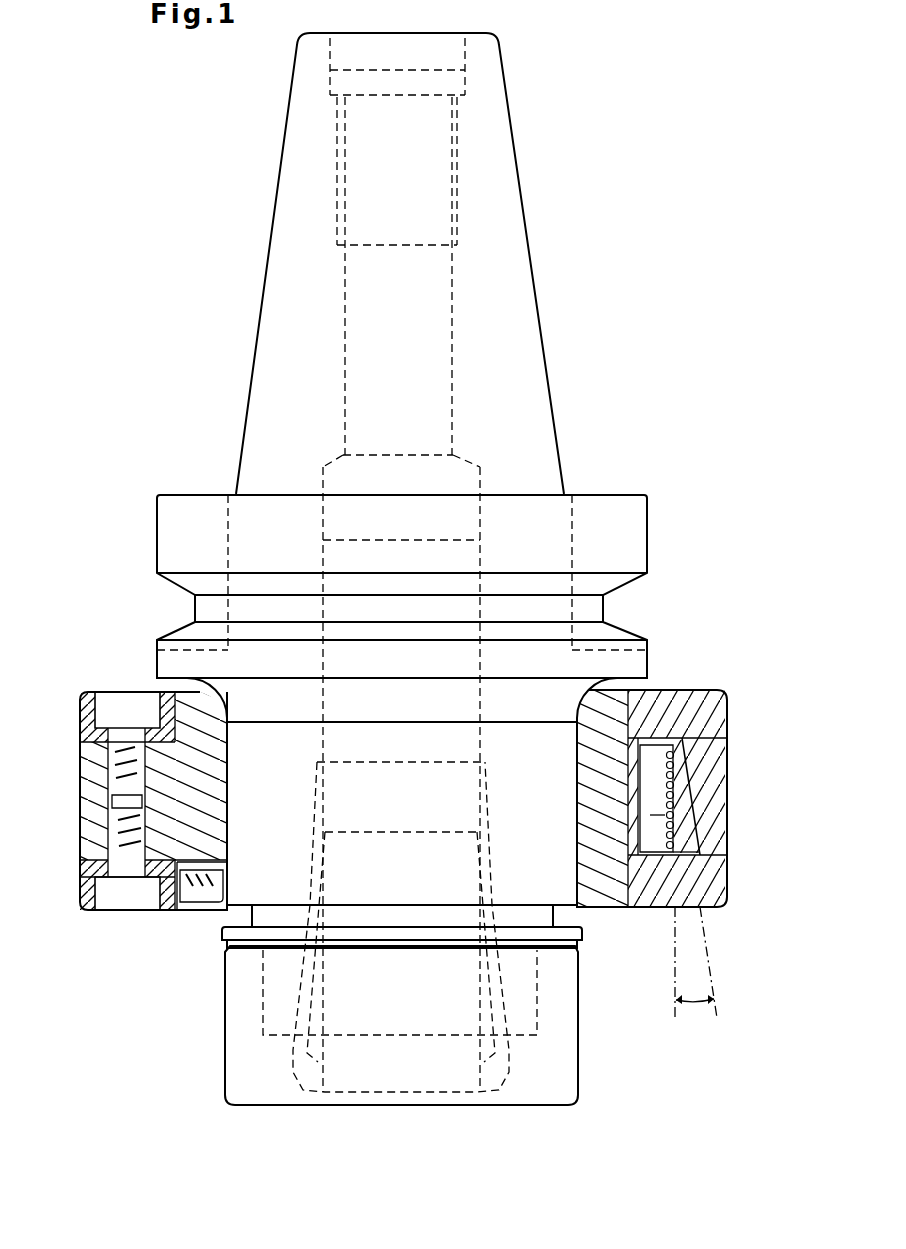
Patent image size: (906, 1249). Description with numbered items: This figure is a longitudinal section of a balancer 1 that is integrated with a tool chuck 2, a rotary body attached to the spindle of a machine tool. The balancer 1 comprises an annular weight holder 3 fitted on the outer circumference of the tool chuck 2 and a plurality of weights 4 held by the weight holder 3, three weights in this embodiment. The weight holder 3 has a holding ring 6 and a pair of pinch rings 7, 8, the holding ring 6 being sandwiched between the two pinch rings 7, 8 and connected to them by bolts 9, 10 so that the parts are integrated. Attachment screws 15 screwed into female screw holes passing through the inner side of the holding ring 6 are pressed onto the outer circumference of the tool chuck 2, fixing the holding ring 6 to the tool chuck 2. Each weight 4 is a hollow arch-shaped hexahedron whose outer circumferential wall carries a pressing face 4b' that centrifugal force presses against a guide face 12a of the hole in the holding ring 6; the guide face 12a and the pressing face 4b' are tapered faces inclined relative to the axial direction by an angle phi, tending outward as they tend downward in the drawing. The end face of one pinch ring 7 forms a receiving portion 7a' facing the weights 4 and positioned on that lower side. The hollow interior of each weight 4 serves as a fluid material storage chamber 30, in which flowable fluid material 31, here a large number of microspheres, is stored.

The balancer 1 is at (700, 683).
The tool chuck 2 is at (627, 517).
The weight holder 3 is at (712, 708).
The weight 4 is at (690, 779).
The pressing face 4b' is at (731, 800).
The holding ring 6 is at (90, 810).
The pinch ring 7 is at (82, 884).
The receiving portion 7a' is at (664, 950).
The pinch ring 8 is at (80, 708).
The bolt 9 is at (120, 700).
The bolt 10 is at (118, 900).
The guide face 12a is at (702, 760).
The attachment screw 15 is at (215, 893).
The fluid material storage chamber 30 is at (693, 827).
The fluid material 31 is at (695, 853).